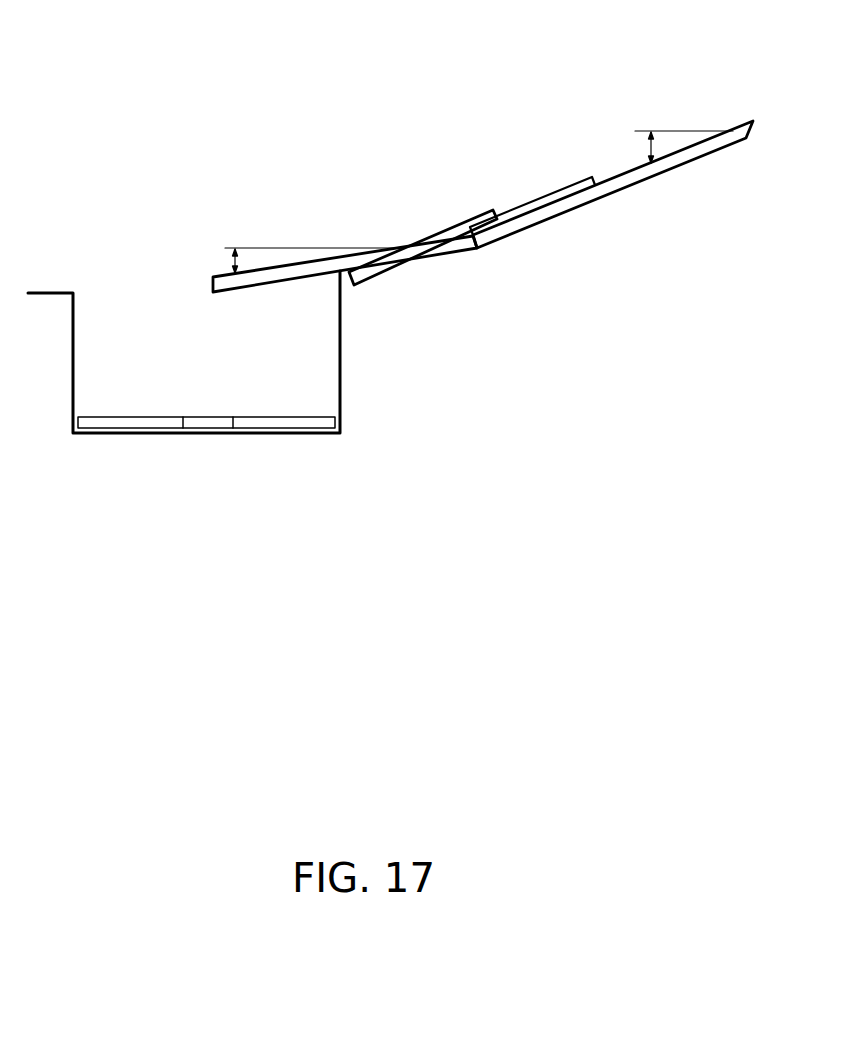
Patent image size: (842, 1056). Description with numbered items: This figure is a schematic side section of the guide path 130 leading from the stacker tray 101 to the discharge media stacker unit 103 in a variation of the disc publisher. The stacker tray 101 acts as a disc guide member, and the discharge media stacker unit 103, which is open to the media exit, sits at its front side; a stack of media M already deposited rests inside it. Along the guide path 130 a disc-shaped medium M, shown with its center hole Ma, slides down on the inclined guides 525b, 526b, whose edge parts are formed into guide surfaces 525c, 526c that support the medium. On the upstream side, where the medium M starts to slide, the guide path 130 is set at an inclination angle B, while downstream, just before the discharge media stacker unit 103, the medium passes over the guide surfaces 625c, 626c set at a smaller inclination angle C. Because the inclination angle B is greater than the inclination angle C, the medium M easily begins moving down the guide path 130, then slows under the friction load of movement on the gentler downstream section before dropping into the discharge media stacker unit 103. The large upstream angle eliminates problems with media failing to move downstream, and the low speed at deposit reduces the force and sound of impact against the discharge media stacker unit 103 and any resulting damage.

The discharge media stacker unit 103 is at (97, 285).
The media M is at (287, 284).
The center hole Ma is at (451, 216).
The stacker tray 101 is at (345, 209).
The guide surface 625c is at (345, 209).
The guide surface 626c is at (302, 262).
The guide path 130 is at (611, 133).
The guide surface 525c is at (613, 133).
The guide surface 526c is at (605, 150).
The inclined guide 525b is at (599, 148).
The inclined guide 526b is at (597, 178).
The inclination angle on the downstream side C is at (302, 263).
The inclination angle on the upstream side B is at (680, 148).